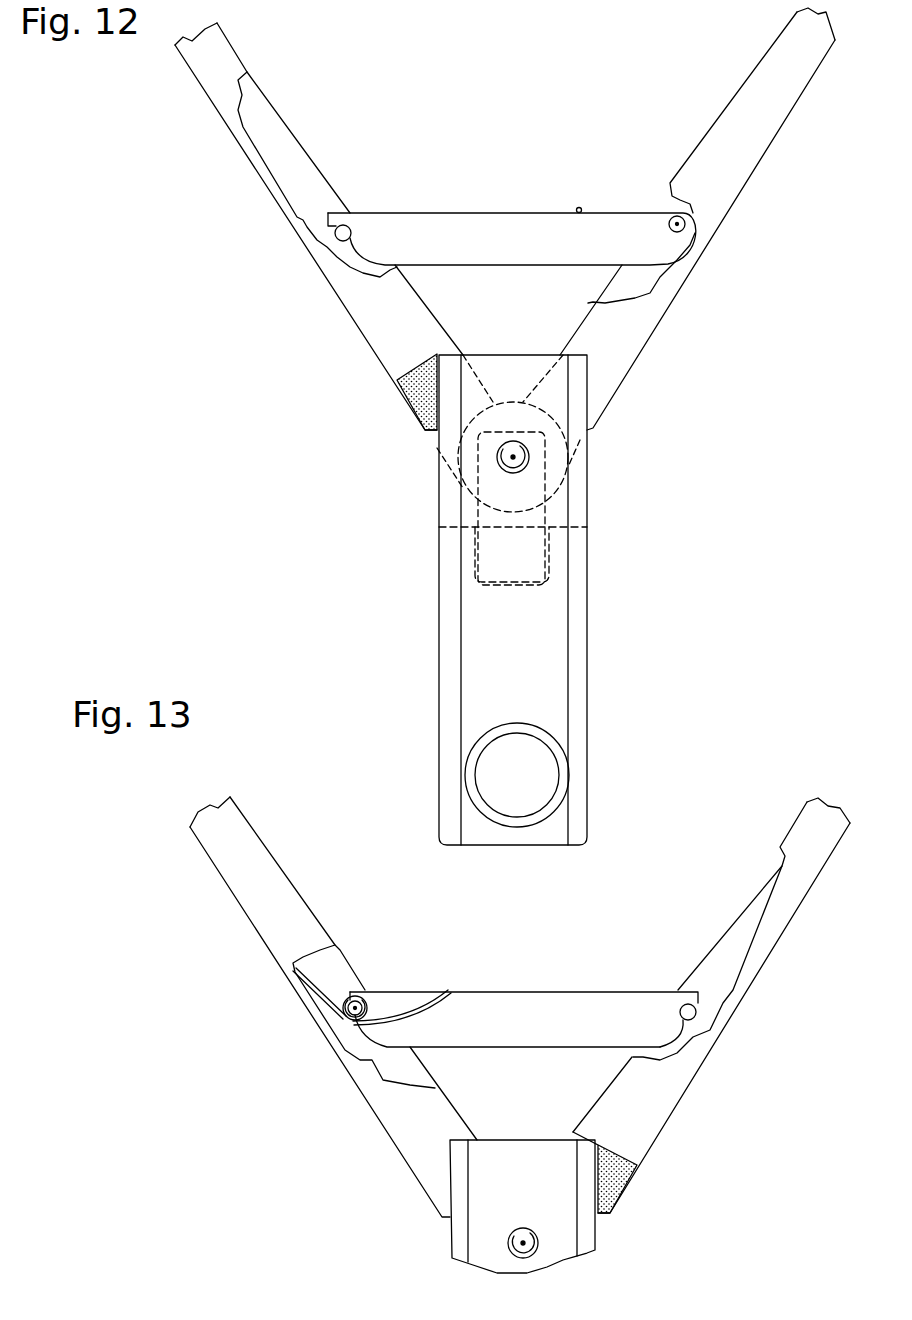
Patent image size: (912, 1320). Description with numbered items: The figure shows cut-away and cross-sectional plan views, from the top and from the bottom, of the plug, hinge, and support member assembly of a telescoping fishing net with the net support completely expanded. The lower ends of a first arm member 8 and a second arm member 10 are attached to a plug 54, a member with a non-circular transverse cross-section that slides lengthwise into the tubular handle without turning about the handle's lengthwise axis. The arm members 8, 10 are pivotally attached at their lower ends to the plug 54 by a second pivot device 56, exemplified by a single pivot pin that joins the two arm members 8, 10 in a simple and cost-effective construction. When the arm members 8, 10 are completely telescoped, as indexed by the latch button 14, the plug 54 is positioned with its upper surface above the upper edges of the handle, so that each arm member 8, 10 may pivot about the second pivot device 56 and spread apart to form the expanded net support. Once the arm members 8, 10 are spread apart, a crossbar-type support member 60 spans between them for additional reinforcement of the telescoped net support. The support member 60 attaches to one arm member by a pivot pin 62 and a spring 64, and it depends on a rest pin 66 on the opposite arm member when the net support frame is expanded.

In FIG. 12, the first arm member 8 is at (368, 318).
In FIG. 13, the first arm member 8 is at (412, 1140).
In FIG. 12, the second arm member 10 is at (650, 345).
In FIG. 13, the second arm member 10 is at (662, 1102).
In FIG. 12, the latch button 14 is at (540, 778).
In FIG. 12, the plug 54 is at (578, 628).
In FIG. 13, the plug 54 is at (508, 1147).
In FIG. 12, the second pivot device 56 is at (520, 457).
In FIG. 13, the second pivot device 56 is at (530, 1242).
In FIG. 12, the support member 60 is at (522, 223).
In FIG. 13, the support member 60 is at (545, 1008).
In FIG. 12, the pivot pin 62 is at (686, 224).
In FIG. 13, the pivot pin 62 is at (365, 993).
In FIG. 13, the spring 64 is at (453, 992).
In FIG. 12, the rest pin 66 is at (335, 232).
In FIG. 13, the rest pin 66 is at (694, 1012).